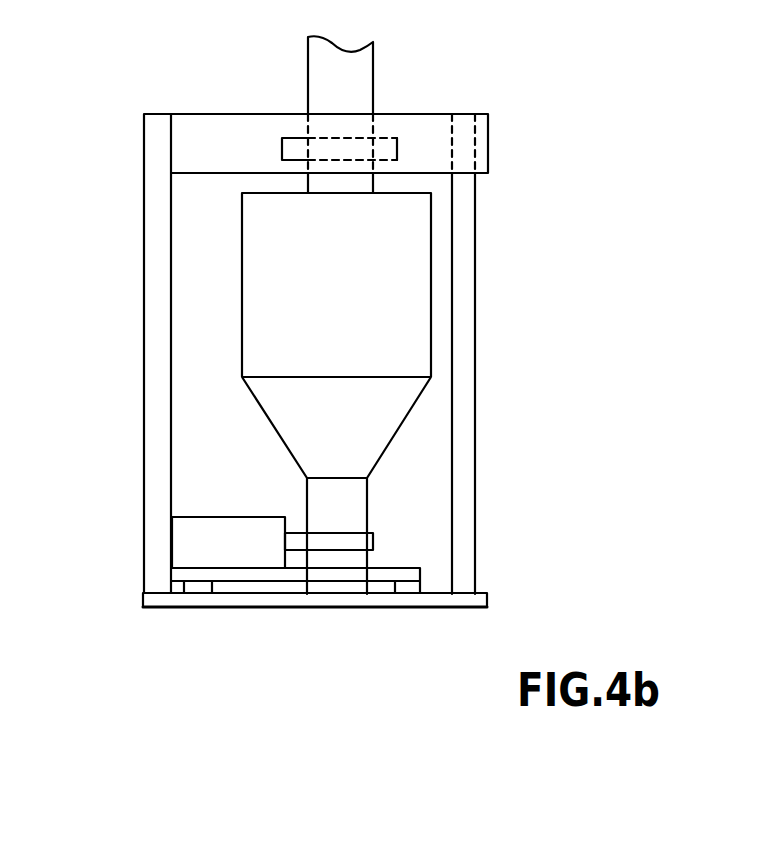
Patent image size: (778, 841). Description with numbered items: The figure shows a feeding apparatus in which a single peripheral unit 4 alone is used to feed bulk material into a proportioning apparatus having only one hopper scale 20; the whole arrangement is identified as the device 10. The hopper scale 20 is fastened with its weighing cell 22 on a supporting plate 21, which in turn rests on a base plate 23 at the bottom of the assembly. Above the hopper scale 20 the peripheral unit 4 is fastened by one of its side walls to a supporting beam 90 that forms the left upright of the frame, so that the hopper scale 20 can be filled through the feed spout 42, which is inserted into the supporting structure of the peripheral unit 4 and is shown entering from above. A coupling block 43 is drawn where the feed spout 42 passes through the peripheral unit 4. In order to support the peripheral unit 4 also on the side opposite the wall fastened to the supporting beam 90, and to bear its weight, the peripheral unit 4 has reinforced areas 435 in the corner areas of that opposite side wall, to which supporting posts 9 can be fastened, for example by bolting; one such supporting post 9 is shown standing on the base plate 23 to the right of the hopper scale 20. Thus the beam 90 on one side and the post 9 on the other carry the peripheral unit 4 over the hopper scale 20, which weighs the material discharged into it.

The peripheral unit 4 is at (420, 114).
The supporting post 9 is at (476, 305).
The dispensing device 10 is at (498, 153).
The hopper scale 20 is at (271, 426).
The supporting plate 21 is at (410, 578).
The weighing cell 22 is at (228, 553).
The base plate 23 is at (163, 600).
The feed spout 42 is at (308, 59).
The coupling block 43 is at (283, 138).
The supporting beam 90 is at (144, 392).
The reinforced area 435 is at (468, 114).